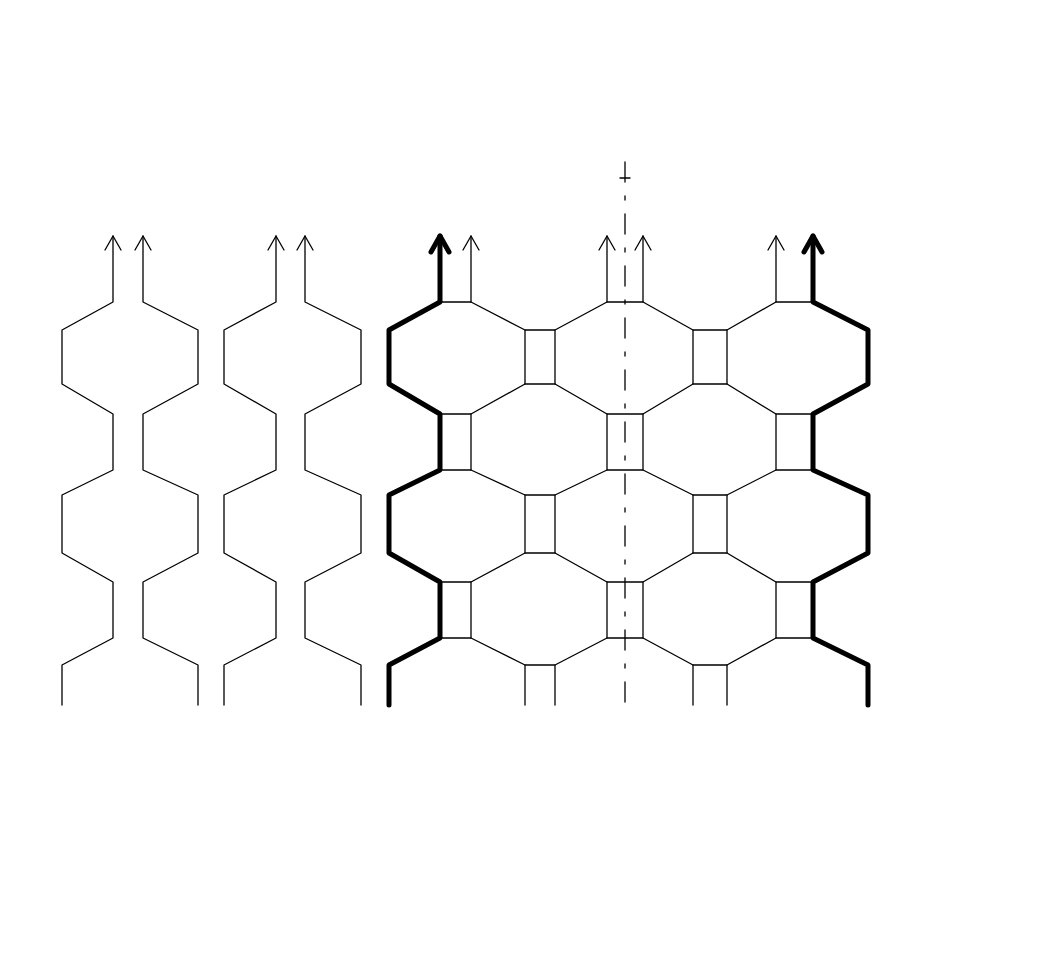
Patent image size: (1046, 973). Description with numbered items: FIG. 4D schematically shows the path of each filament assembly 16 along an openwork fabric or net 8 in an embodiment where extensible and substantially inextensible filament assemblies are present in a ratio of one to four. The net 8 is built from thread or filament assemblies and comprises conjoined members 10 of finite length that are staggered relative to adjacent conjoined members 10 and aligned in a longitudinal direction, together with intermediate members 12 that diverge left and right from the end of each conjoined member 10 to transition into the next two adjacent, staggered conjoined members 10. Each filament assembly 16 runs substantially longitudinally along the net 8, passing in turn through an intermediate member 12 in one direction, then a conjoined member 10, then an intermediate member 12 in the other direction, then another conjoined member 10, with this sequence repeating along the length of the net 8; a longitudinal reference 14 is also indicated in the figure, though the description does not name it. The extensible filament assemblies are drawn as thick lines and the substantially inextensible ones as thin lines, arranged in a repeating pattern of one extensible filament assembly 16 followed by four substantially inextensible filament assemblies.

The openwork fabric or net 8 is at (630, 474).
The conjoined member 10 is at (737, 348).
The intermediate member 12 is at (762, 395).
The centerline axis 14 is at (622, 133).
The filament assembly 16 is at (523, 697).